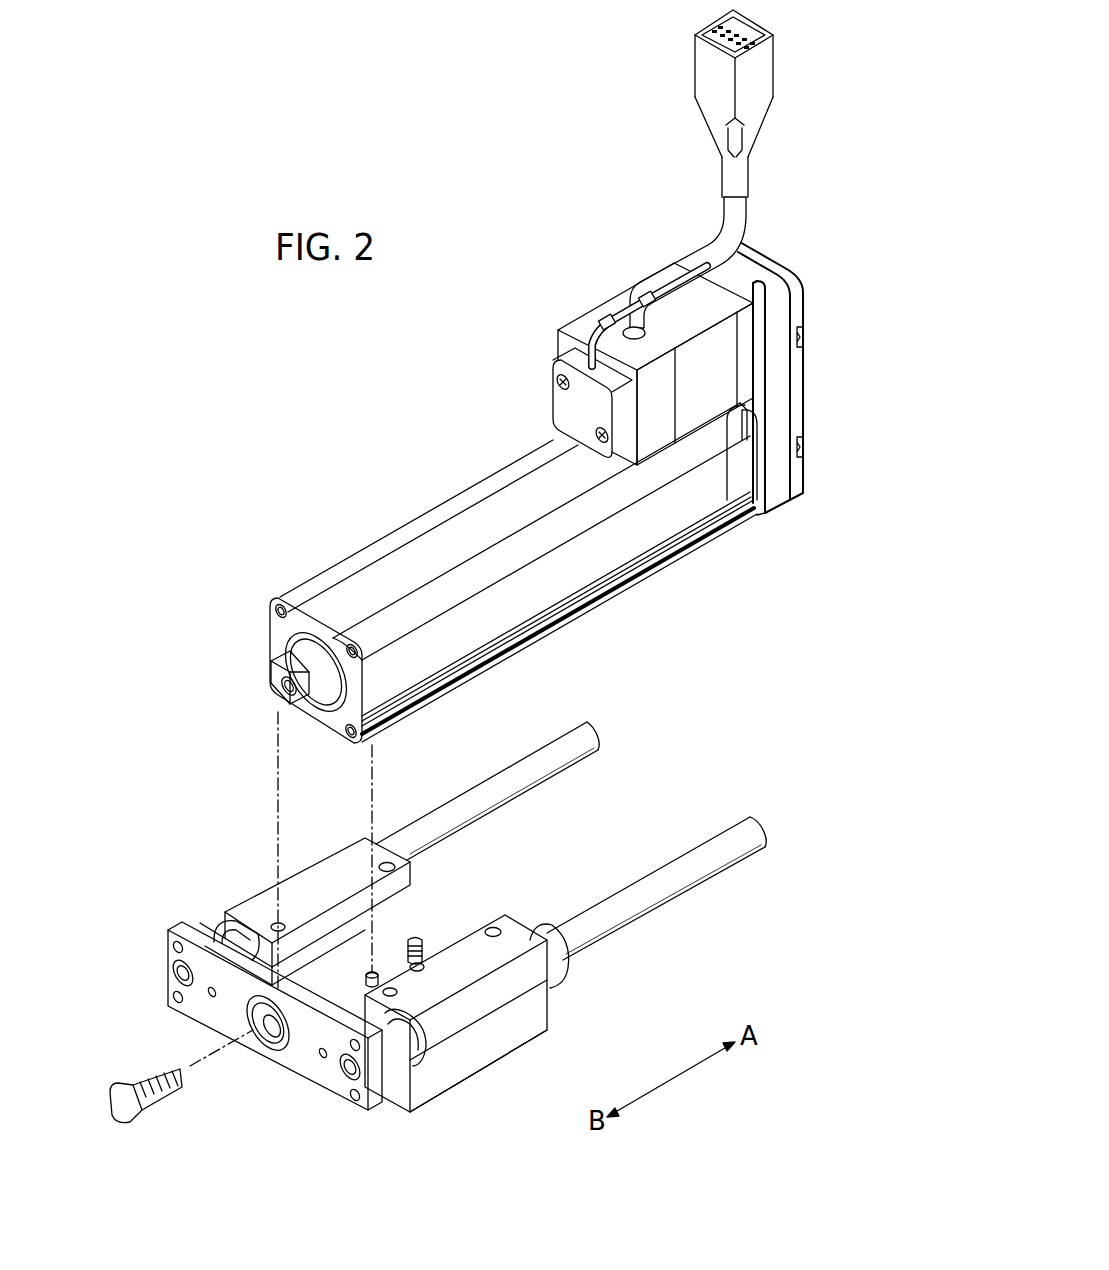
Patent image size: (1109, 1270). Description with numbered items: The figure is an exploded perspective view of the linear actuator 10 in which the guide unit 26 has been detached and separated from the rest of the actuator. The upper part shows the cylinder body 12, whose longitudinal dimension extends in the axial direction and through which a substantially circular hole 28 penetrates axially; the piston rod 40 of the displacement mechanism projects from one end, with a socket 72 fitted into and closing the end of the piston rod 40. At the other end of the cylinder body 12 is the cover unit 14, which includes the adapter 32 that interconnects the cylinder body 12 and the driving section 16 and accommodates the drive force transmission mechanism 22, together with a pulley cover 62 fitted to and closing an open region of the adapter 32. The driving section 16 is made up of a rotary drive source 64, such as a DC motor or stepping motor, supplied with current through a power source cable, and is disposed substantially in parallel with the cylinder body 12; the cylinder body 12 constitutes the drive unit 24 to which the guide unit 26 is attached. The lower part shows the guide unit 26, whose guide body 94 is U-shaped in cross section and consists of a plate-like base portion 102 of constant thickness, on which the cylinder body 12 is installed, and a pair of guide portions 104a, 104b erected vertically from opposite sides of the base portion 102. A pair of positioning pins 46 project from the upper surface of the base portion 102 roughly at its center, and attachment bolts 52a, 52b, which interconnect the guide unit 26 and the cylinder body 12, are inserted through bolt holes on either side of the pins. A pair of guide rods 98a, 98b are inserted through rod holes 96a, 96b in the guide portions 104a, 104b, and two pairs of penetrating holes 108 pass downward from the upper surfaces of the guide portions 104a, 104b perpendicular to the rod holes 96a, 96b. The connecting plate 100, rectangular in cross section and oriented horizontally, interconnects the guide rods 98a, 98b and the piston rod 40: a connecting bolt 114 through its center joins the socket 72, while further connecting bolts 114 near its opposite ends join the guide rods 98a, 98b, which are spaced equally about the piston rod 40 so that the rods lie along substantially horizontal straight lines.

The linear actuator 10 is at (246, 416).
The cylinder body 12 is at (447, 482).
The cover unit 14 is at (807, 304).
The driving section 16 is at (629, 291).
The drive force transmission mechanism 22 is at (780, 250).
The drive unit 24 is at (665, 572).
The guide unit 26 is at (448, 1102).
The hole 28 is at (270, 642).
The adapter 32 is at (777, 503).
The piston rod 40 is at (332, 634).
The positioning pins 46 is at (366, 972).
The attachment bolt 52a is at (332, 993).
The attachment bolt 52b is at (418, 968).
The pulley cover 62 is at (797, 470).
The rotary drive source 64 is at (715, 385).
The socket 72 is at (267, 677).
The guide body 94 is at (505, 1030).
The rod hole 96a is at (233, 915).
The rod hole 96b is at (392, 1022).
The guide rod 98a is at (556, 748).
The guide rod 98b is at (712, 848).
The connecting plate 100 is at (232, 1023).
The base portion 102 is at (416, 940).
The guide portion 104a is at (328, 863).
The guide portion 104b is at (540, 978).
The penetrating holes 108 is at (388, 862).
The connecting bolt 114 is at (166, 973).